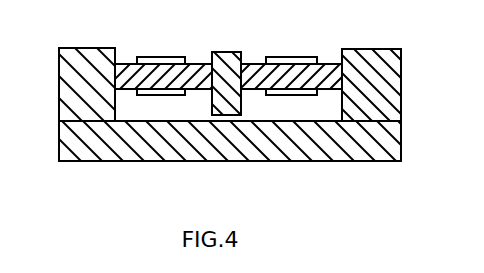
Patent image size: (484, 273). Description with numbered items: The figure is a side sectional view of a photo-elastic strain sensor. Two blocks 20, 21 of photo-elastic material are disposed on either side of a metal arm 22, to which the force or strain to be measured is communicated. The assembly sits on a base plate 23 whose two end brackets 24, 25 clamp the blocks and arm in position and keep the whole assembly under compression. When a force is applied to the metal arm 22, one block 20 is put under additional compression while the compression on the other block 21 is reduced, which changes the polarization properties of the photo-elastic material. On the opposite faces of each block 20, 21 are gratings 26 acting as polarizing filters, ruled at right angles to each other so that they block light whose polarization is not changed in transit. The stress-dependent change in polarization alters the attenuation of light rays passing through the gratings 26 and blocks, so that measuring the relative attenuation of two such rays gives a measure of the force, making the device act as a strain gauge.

The block of photo-elastic material 20 is at (137, 63).
The block of photo-elastic material 21 is at (249, 72).
The metal arm 22 is at (209, 62).
The base plate 23 is at (63, 140).
The end bracket 24 is at (80, 63).
The end bracket 25 is at (373, 89).
The gratings 26 is at (305, 60).